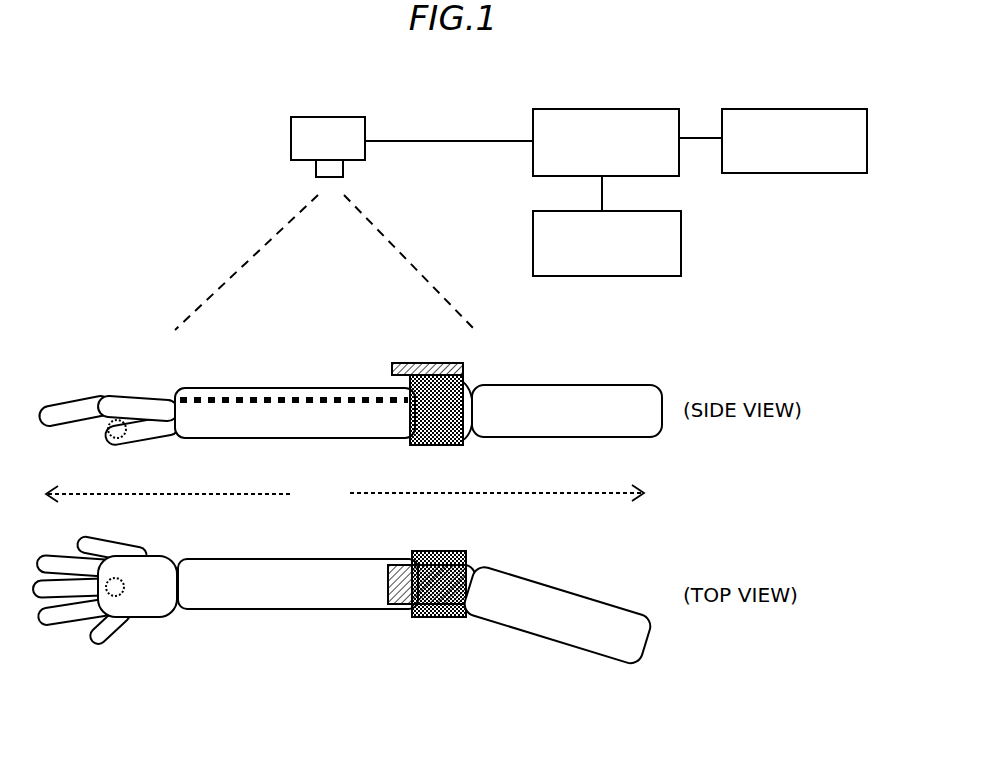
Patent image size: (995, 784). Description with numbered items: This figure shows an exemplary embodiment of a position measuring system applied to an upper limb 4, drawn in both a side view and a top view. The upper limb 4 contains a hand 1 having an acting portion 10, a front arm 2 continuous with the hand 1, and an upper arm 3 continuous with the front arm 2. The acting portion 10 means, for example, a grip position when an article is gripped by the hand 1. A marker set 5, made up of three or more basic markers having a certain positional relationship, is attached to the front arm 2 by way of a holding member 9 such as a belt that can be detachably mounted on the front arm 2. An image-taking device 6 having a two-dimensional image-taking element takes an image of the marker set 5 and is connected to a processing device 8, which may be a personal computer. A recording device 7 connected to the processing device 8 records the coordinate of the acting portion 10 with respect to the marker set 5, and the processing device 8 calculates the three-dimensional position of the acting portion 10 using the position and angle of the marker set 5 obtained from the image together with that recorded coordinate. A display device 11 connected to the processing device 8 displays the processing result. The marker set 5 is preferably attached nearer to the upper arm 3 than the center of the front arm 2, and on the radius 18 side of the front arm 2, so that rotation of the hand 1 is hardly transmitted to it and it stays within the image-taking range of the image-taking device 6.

The hand 1 is at (120, 397).
The front arm 2 is at (246, 388).
The upper arm 3 is at (578, 386).
The upper limb 4 is at (345, 494).
The marker set 5 is at (408, 363).
The image-taking device 6 is at (333, 115).
The recording device 7 is at (681, 242).
The processing device 8 is at (605, 108).
The holding member 9 is at (463, 374).
The acting portion 10 is at (126, 437).
The display device 11 is at (800, 108).
The radius 18 is at (346, 394).